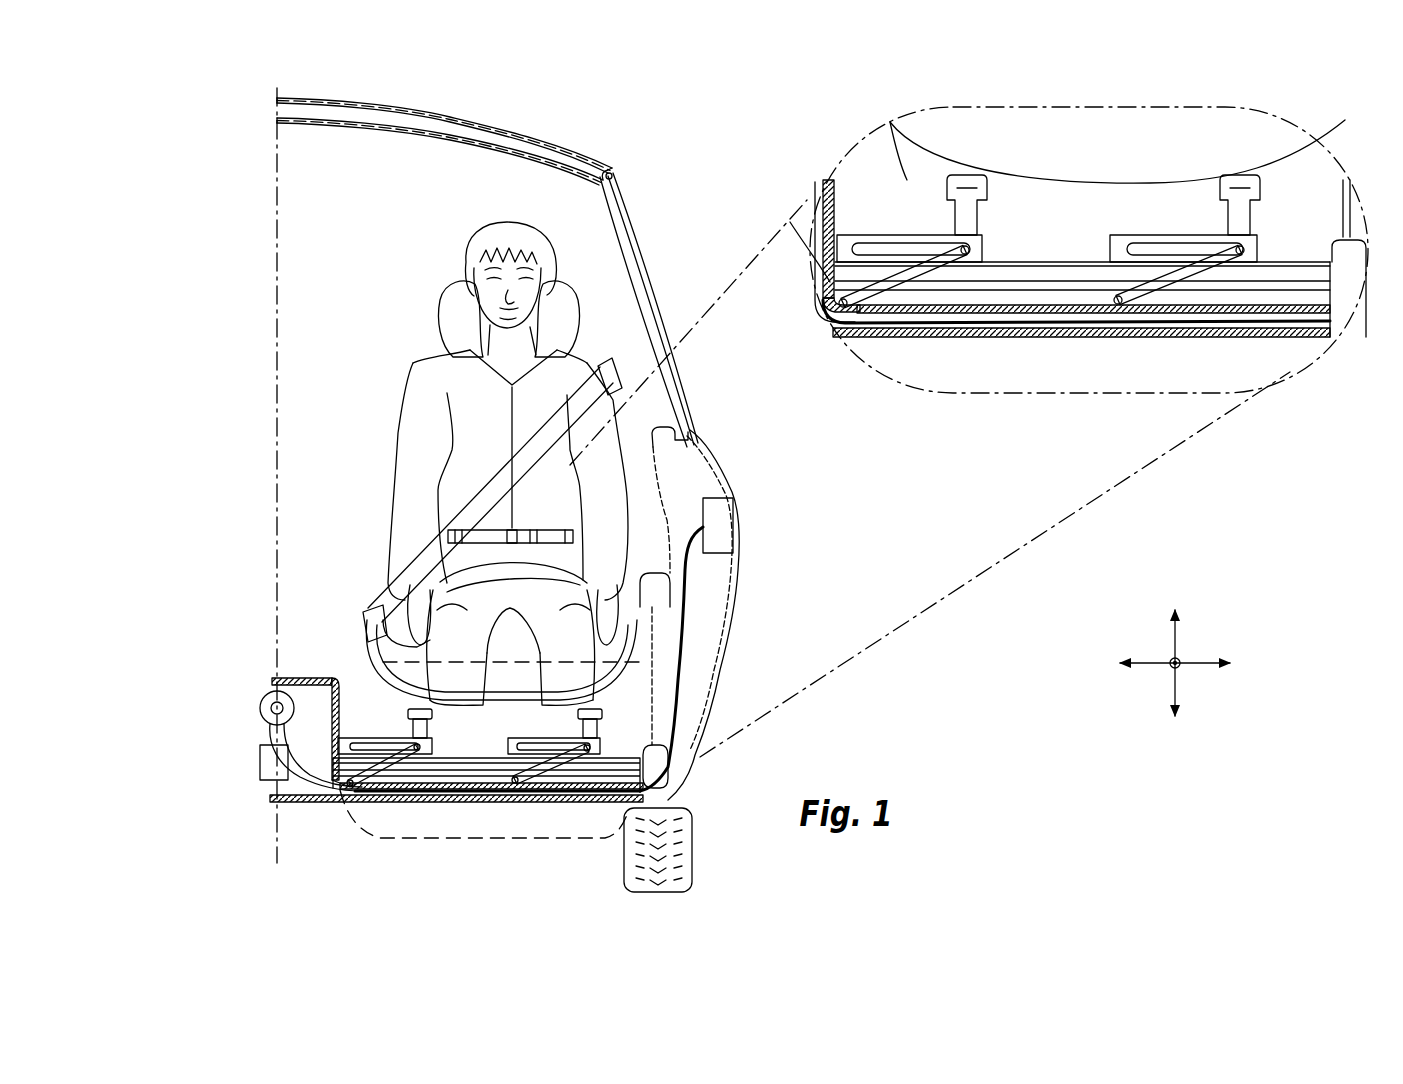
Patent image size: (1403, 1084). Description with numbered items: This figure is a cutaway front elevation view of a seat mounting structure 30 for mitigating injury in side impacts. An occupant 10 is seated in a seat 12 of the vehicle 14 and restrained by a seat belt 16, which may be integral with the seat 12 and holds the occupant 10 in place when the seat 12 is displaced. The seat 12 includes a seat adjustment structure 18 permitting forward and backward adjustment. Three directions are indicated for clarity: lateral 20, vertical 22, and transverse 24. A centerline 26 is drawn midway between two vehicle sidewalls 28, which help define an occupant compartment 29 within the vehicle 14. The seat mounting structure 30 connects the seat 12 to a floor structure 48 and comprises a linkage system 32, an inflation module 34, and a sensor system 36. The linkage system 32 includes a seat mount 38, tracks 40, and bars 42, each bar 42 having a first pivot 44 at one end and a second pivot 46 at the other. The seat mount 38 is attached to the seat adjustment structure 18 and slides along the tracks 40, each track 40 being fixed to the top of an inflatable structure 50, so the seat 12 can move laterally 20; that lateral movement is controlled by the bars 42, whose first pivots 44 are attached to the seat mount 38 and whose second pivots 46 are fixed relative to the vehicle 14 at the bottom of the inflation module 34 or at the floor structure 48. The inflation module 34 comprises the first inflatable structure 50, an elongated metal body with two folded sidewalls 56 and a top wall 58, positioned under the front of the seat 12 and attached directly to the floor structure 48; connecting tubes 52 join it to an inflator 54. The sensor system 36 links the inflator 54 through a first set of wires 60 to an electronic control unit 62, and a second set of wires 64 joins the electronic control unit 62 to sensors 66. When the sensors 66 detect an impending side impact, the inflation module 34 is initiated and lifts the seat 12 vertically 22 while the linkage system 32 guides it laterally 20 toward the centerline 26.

The occupant 10 is at (540, 240).
The seat 12 is at (560, 290).
The vehicle 14 is at (667, 230).
The seat belt 16 is at (610, 380).
The seat adjustment structure 18 is at (660, 720).
The lateral direction 20 is at (1205, 663).
The vertical direction 22 is at (1173, 687).
The transverse direction 24 is at (1180, 660).
The centerline 26 is at (277, 157).
The vehicle sidewall 28 is at (730, 637).
The occupant compartment 29 is at (341, 189).
The seat mounting structure 30 is at (213, 757).
The linkage system 32 is at (655, 740).
The inflation module 34 is at (312, 697).
The sensor system 36 is at (750, 535).
The seat mount 38 is at (435, 716).
The track 40 is at (370, 740).
The bar 42 is at (520, 748).
The first pivot 44 is at (418, 745).
The second pivot 46 is at (348, 808).
The floor structure 48 is at (560, 792).
The first inflatable structure 50 is at (606, 782).
The connecting tube 52 is at (290, 682).
The inflator 54 is at (260, 706).
The folded sidewall 56 is at (468, 782).
The top wall 58 is at (627, 748).
The first set of wires 60 is at (265, 730).
The electronic control unit 62 is at (258, 777).
The second set of wires 64 is at (312, 792).
The sensor 66 is at (725, 525).